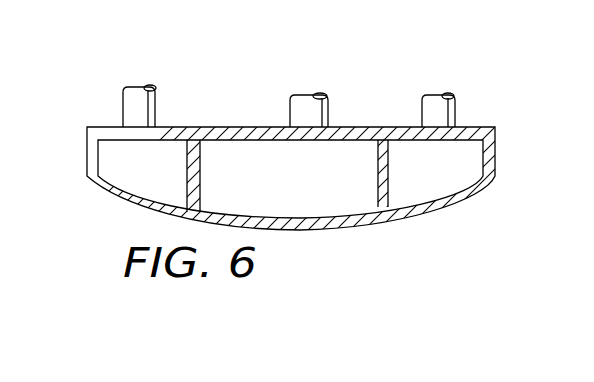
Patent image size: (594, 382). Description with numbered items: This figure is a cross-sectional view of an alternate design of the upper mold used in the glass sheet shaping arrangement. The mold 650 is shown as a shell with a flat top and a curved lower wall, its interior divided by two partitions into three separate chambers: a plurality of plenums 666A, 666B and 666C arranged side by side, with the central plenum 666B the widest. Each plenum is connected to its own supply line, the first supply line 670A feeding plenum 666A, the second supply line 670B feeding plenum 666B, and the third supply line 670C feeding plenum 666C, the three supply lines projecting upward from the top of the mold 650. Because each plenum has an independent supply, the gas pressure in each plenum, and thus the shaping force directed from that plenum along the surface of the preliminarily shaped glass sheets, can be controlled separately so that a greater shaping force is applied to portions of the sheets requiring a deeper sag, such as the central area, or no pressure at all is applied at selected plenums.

The mold 650 is at (488, 142).
The plenum 666A is at (166, 177).
The plenum 666B is at (323, 182).
The plenum 666C is at (462, 176).
The supply line 670A is at (157, 107).
The supply line 670B is at (317, 97).
The supply line 670C is at (458, 112).